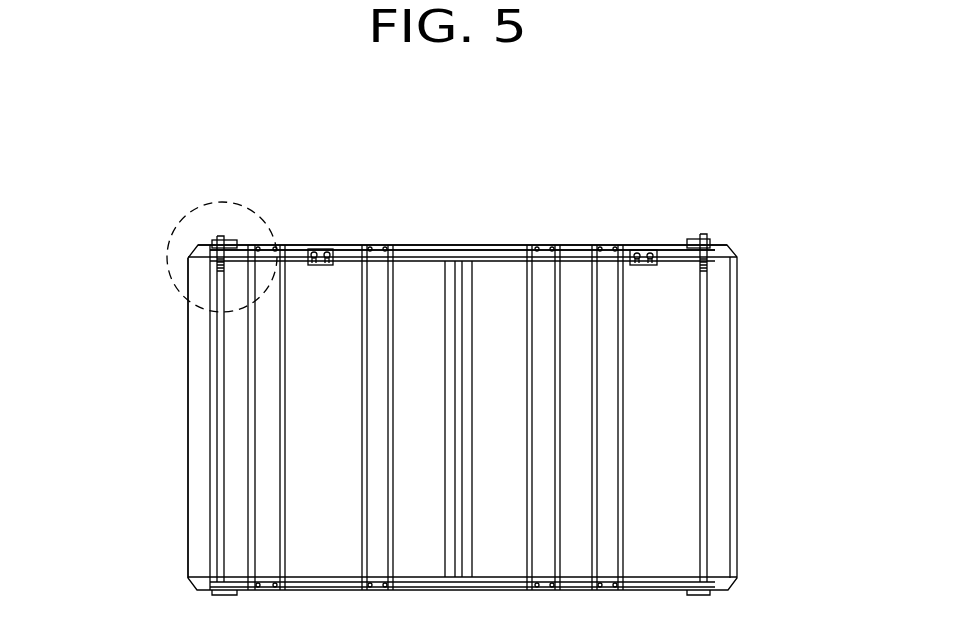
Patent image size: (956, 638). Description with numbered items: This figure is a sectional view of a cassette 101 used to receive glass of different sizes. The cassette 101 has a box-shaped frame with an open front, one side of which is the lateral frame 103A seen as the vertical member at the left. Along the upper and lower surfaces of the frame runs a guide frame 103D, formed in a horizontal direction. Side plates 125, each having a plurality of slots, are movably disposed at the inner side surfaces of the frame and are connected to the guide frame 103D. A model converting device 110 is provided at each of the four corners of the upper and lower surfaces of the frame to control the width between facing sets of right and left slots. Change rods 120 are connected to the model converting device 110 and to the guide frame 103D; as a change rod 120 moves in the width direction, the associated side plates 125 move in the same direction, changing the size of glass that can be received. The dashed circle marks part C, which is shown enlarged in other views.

The cassette 101 is at (722, 195).
The lateral frame 103A is at (200, 423).
The guide frame 103D is at (421, 247).
The model converting device 110 is at (231, 242).
The change rod 120 is at (215, 339).
The side plate 125 is at (268, 522).
The part C is at (165, 248).